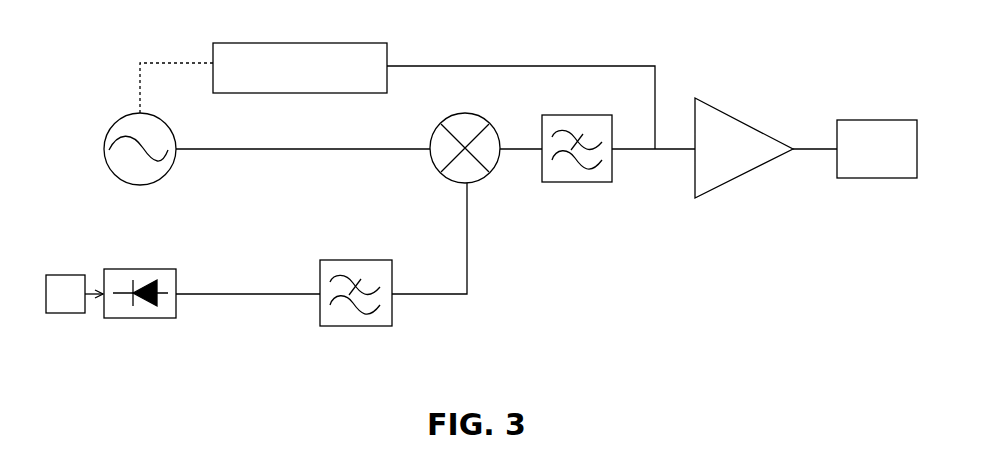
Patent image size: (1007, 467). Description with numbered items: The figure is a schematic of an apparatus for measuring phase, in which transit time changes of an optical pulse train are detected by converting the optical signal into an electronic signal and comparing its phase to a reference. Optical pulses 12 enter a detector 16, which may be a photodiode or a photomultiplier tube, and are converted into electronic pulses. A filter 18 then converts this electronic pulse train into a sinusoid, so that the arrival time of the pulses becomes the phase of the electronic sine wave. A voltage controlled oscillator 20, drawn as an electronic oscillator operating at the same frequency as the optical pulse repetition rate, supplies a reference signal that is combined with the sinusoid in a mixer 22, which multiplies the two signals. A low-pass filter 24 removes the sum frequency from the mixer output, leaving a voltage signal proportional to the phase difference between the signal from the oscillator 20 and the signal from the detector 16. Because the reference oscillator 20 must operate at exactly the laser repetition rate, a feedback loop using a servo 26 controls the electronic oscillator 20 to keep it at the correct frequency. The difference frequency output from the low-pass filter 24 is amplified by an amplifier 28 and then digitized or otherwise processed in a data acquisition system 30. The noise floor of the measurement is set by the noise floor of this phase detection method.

The optical pulses 12 is at (65, 283).
The detector 16 is at (178, 275).
The filter 18 is at (332, 257).
The voltage controlled oscillator 20 is at (173, 127).
The mixer 22 is at (443, 182).
The low-pass filter 24 is at (578, 112).
The servo 26 is at (339, 95).
The amplifier 28 is at (722, 111).
The data acquisition system 30 is at (847, 118).